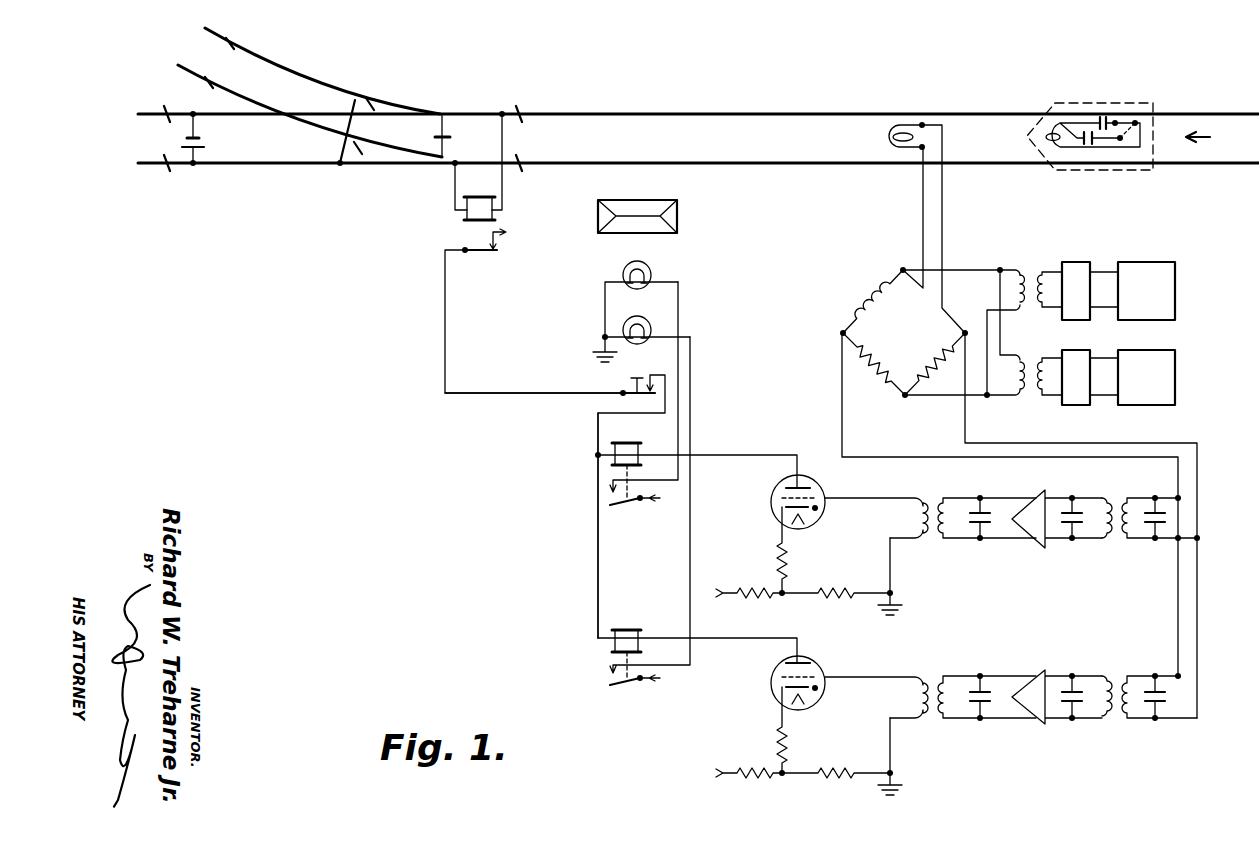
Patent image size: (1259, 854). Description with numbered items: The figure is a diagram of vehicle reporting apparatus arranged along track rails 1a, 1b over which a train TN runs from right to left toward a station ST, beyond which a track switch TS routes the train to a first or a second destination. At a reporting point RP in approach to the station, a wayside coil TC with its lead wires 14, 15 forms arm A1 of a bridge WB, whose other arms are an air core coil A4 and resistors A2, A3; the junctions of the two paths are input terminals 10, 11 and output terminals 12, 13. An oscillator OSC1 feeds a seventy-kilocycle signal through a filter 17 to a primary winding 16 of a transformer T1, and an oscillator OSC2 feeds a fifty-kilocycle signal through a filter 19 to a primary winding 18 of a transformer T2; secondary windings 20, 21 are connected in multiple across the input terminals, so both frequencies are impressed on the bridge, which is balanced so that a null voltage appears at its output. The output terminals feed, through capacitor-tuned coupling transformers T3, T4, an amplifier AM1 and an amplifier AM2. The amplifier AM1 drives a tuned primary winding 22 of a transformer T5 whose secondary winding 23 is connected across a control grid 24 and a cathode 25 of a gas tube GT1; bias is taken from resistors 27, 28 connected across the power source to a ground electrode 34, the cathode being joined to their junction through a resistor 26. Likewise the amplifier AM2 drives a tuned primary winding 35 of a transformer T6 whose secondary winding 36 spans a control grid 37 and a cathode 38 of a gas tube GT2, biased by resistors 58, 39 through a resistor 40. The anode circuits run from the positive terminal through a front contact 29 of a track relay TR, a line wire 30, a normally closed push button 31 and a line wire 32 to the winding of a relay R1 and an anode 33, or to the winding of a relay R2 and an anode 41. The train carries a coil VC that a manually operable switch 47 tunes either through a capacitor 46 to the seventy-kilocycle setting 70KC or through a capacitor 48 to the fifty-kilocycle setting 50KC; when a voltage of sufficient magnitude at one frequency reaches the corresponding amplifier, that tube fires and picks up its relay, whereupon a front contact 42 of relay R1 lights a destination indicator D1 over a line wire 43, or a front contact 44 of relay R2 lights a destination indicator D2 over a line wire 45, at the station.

The track rail 1a is at (757, 115).
The track rail 1b is at (755, 172).
The input terminal of the bridge 10 is at (900, 270).
The input terminal of the bridge 11 is at (905, 398).
The output terminal of the bridge 12 is at (840, 335).
The output terminal of the bridge 13 is at (962, 335).
The lead wire 14 is at (921, 210).
The lead wire 15 is at (942, 210).
The primary winding of transformer T1 16 is at (1044, 304).
The filter 17 is at (1076, 320).
The primary winding of transformer T2 18 is at (1042, 392).
The filter 19 is at (1082, 352).
The secondary winding of transformer T1 20 is at (999, 269).
The secondary winding of transformer T2 21 is at (1014, 392).
The tuned primary winding of transformer T5 22 is at (943, 535).
The secondary winding of transformer T5 23 is at (920, 524).
The control grid 24 is at (811, 497).
The cathode 25 is at (786, 507).
The resistor 26 is at (786, 562).
The resistor 27 is at (754, 589).
The resistor 28 is at (842, 589).
The front contact of track relay TR 29 is at (497, 250).
The line wire 30 is at (522, 393).
The push button 31 is at (631, 495).
The line wire 32 is at (598, 422).
The anode 33 is at (804, 484).
The ground electrode 34 is at (895, 597).
The tuned primary winding of transformer T6 35 is at (946, 717).
The secondary winding of transformer T6 36 is at (923, 706).
The control grid 37 is at (811, 676).
The cathode 38 is at (786, 689).
The resistor 39 is at (842, 768).
The resistor 40 is at (786, 742).
The anode 41 is at (804, 661).
The front contact of relay R1 42 is at (613, 502).
The line wire 43 is at (678, 313).
The front contact of relay R2 44 is at (605, 678).
The line wire 45 is at (690, 390).
The capacitor 46 is at (1103, 116).
The manually operable switch 47 is at (1135, 122).
The capacitor 48 is at (1088, 145).
The resistor 58 is at (754, 768).
The track switch TS is at (486, 104).
The track relay TR is at (477, 167).
The station ST is at (637, 204).
The destination indicator D1 is at (637, 266).
The destination indicator D2 is at (637, 320).
The relay R1 is at (696, 455).
The relay R2 is at (697, 636).
The gas tube GT1 is at (796, 488).
The gas tube GT2 is at (796, 670).
The transformer T1 is at (1024, 274).
The transformer T2 is at (1025, 362).
The coupling transformer T3 is at (1120, 498).
The coupling transformer T4 is at (1120, 680).
The transformer T5 is at (930, 519).
The transformer T6 is at (930, 701).
The amplifier AM1 is at (1040, 547).
The amplifier AM2 is at (1040, 722).
The oscillator OSC1 is at (1175, 290).
The oscillator OSC2 is at (1175, 377).
The bridge WB is at (887, 335).
The bridge arm A1 is at (959, 298).
The bridge arm A2 is at (934, 364).
The bridge arm A3 is at (873, 363).
The bridge arm A4 is at (868, 299).
The reporting point RP is at (883, 120).
The wayside coil TC is at (888, 138).
The coil VC is at (1085, 126).
The train TN is at (1088, 103).
The seventy kilocycle tuning position 70KC is at (1115, 120).
The fifty kilocycle tuning position 50KC is at (1121, 142).